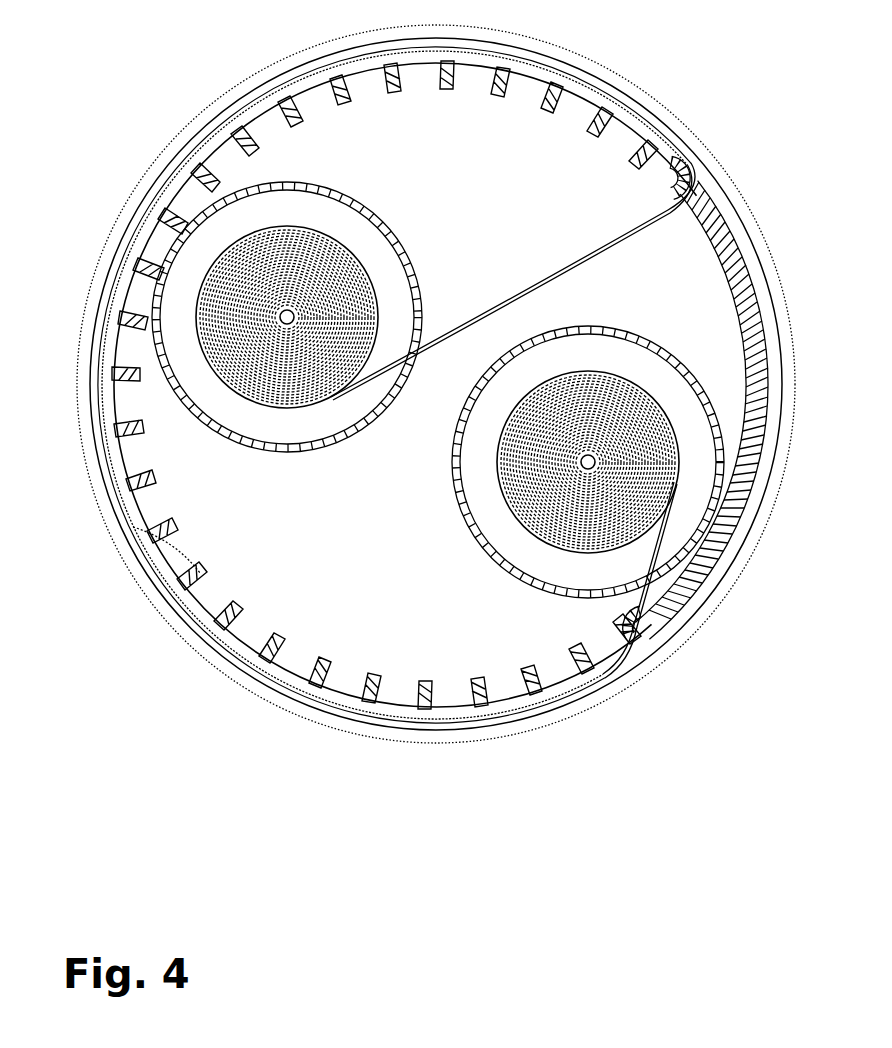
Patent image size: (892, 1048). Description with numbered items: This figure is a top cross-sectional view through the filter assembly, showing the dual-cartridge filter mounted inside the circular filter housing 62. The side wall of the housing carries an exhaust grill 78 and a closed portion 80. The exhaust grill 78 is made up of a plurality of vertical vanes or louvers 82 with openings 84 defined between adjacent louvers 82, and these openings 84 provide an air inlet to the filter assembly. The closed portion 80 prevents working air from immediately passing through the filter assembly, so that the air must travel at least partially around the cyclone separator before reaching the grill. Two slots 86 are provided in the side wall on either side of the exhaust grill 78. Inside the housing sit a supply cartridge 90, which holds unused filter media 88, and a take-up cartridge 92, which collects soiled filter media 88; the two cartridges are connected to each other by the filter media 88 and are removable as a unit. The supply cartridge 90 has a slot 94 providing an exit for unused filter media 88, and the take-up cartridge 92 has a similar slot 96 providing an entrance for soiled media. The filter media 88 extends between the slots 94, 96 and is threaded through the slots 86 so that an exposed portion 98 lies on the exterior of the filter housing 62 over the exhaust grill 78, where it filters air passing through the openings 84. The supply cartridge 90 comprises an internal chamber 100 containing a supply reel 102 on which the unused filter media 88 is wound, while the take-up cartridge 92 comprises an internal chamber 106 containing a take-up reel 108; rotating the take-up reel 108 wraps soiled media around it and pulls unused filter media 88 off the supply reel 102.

The filter housing 62 is at (763, 206).
The exhaust grill 78 is at (108, 461).
The closed portion 80 is at (727, 470).
The louvers 82 is at (166, 532).
The openings 84 is at (137, 527).
The slots 86 is at (688, 178).
The filter media 88 is at (592, 367).
The supply cartridge 90 is at (162, 249).
The take-up cartridge 92 is at (620, 324).
The slot 94 is at (413, 358).
The slot 96 is at (662, 645).
The exposed portion 98 is at (110, 305).
The internal chamber 100 is at (246, 207).
The supply reel 102 is at (290, 315).
The internal chamber 106 is at (553, 562).
The take-up reel 108 is at (594, 458).